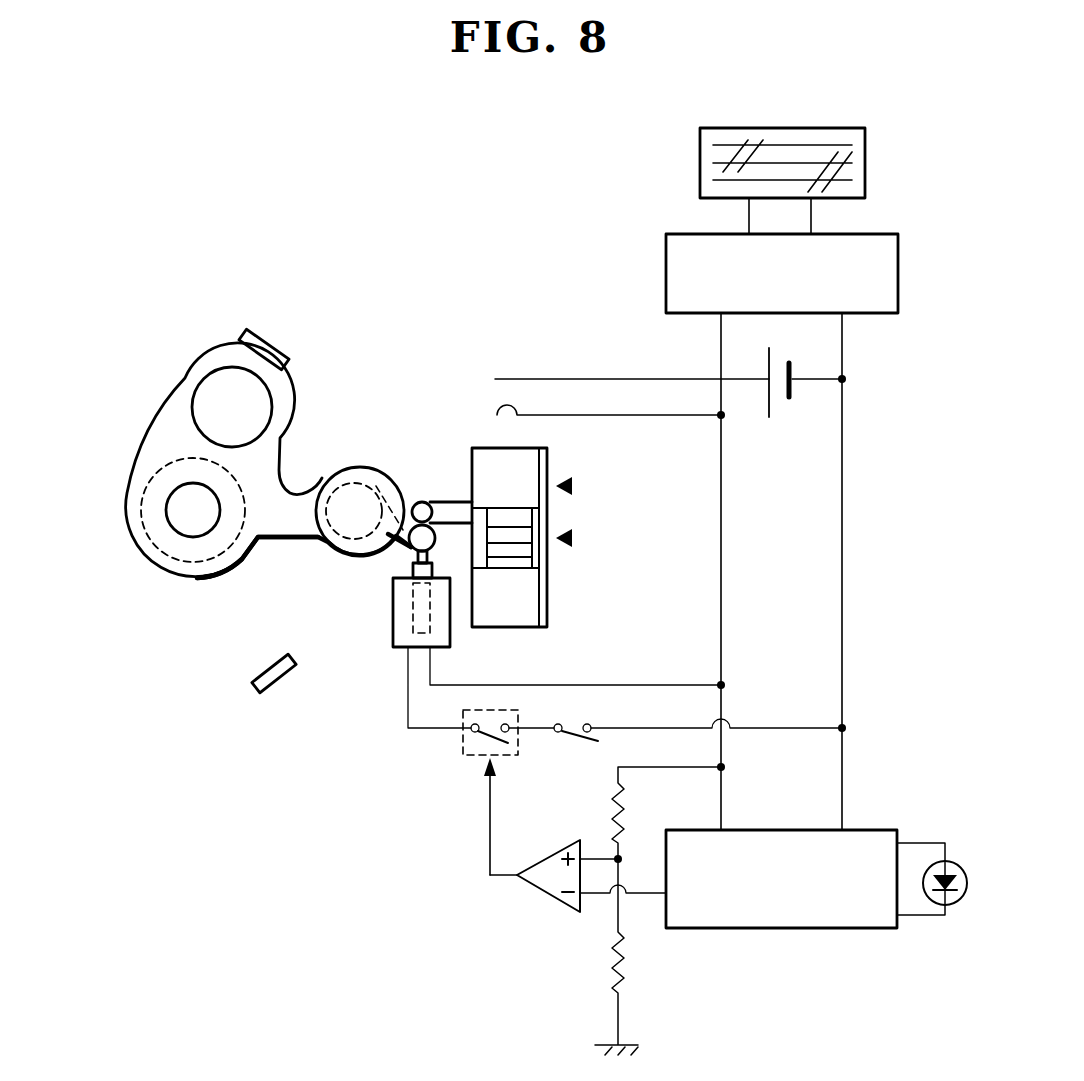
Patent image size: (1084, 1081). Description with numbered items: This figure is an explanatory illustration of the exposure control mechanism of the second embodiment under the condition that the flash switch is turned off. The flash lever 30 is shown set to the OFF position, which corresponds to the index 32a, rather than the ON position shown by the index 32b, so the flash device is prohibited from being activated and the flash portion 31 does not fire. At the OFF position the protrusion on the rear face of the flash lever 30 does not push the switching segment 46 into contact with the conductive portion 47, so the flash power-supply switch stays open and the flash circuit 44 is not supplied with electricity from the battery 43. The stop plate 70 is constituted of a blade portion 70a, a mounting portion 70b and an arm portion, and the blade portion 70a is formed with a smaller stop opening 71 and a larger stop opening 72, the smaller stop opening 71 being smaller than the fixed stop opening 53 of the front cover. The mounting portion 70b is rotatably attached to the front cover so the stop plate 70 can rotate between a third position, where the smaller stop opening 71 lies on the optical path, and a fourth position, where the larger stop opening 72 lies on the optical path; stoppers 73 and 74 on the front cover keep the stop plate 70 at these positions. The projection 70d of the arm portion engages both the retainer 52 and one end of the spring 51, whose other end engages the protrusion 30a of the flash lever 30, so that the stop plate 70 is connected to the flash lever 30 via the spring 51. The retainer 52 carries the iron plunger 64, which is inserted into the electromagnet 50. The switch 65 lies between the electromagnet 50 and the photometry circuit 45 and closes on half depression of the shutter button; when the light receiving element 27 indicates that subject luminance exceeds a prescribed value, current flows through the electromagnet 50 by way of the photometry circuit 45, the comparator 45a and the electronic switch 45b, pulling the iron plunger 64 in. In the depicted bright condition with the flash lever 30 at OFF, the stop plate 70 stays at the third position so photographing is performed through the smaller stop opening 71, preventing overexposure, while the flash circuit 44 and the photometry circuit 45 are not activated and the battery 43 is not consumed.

The light receiving element 27 is at (955, 906).
The flash lever 30 is at (577, 635).
The protrusion 30a is at (422, 500).
The flash portion 31 is at (700, 150).
The index 32a is at (655, 542).
The index 32b is at (645, 482).
The battery 43 is at (770, 400).
The flash circuit 44 is at (666, 258).
The photometry circuit 45 is at (790, 930).
The comparator 45a is at (547, 905).
The electronic switch 45b is at (463, 757).
The switching segment 46 is at (497, 412).
The conductive portion 47 is at (535, 379).
The electromagnet 50 is at (395, 650).
The spring 51 is at (336, 482).
The retainer 52 is at (416, 551).
The fixed stop opening 53 is at (160, 562).
The iron plunger 64 is at (440, 648).
The switch 65 is at (575, 735).
The stop plate 70 is at (168, 371).
The blade portion 70a is at (201, 579).
The mounting portion 70b is at (360, 468).
The projection 70d is at (410, 548).
The smaller stop opening 71 is at (166, 500).
The larger stop opening 72 is at (218, 364).
The stopper 73 is at (263, 338).
The stopper 74 is at (272, 684).